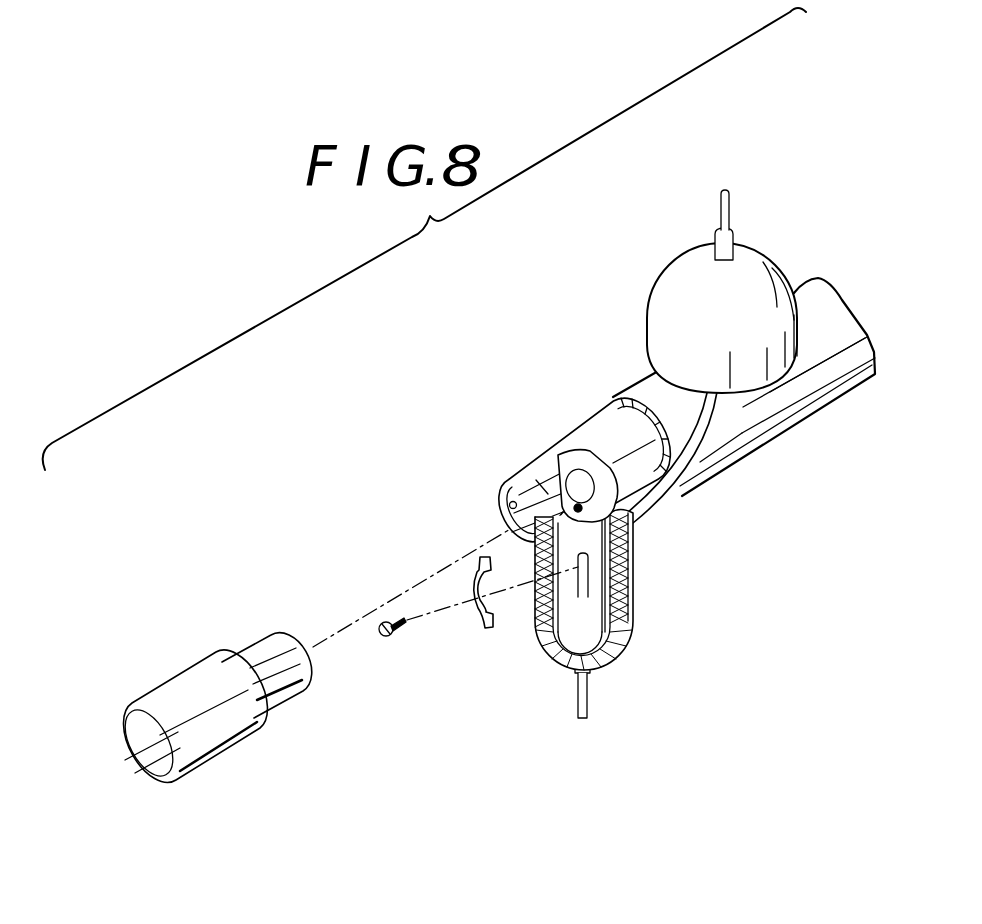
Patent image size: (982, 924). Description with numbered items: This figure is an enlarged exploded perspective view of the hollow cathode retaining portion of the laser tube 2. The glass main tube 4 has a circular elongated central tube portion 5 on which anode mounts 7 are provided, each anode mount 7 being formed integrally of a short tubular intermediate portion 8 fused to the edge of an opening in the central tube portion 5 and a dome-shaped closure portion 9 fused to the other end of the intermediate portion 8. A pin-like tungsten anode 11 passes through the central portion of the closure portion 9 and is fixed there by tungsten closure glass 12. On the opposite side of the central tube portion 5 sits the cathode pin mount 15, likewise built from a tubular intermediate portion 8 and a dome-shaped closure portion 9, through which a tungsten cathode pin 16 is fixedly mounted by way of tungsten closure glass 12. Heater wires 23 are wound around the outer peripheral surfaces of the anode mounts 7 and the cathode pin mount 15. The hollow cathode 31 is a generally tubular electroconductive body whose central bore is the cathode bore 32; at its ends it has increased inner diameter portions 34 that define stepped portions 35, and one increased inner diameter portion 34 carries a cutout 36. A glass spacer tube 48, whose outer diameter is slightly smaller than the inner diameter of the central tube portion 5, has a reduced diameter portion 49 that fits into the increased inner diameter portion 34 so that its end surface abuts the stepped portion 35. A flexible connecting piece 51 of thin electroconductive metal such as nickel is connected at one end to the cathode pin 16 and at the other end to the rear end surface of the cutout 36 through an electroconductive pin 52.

The laser tube 2 is at (838, 398).
The glass main tube 4 is at (803, 422).
The central tube portion 5 is at (735, 463).
The anode mount 7 is at (763, 262).
The intermediate portion 8 is at (627, 577).
The dome-shaped closure portion 9 is at (613, 663).
The anode 11 is at (728, 196).
The tungsten closure glass 12 is at (715, 233).
The cathode pin mount 15 is at (573, 571).
The cathode pin 16 is at (590, 703).
The heater wire 23 is at (522, 553).
The hollow cathode 31 is at (593, 437).
The cathode bore 32 is at (570, 467).
The increased inner diameter portion 34 is at (513, 500).
The stepped portion 35 is at (640, 520).
The cutout 36 is at (540, 485).
The spacer tube 48 is at (193, 670).
The reduced diameter portion 49 is at (267, 637).
The flexible connecting piece 51 is at (483, 630).
The electroconductive pin 52 is at (400, 636).